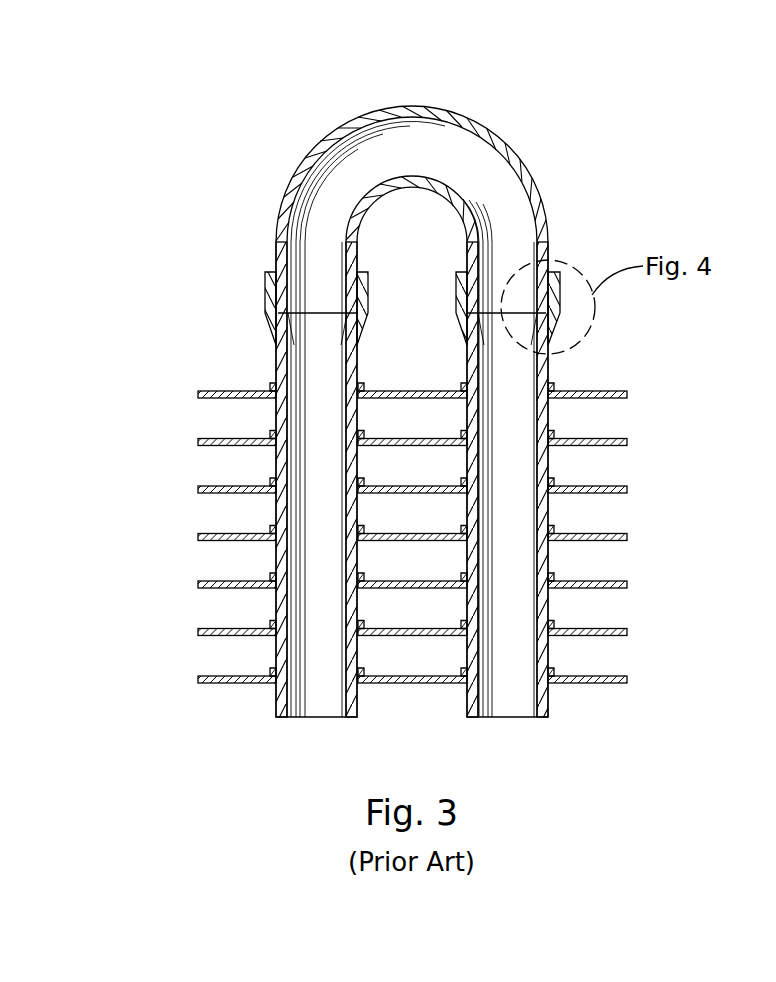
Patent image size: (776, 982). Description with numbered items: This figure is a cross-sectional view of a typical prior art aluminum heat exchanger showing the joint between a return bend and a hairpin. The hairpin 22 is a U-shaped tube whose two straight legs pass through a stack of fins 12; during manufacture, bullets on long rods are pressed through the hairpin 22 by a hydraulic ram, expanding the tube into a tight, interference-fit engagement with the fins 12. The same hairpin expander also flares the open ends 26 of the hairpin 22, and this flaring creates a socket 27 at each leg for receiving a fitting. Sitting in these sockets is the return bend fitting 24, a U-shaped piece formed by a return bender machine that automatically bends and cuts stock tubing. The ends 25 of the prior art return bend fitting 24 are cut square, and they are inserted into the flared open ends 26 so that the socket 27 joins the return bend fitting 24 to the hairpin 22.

The return bend fitting 24 is at (513, 150).
The hairpin 22 is at (550, 693).
The fin 12 is at (593, 582).
The end of return bend fitting 25 is at (272, 327).
The open end of hairpin 26 is at (550, 362).
The socket 27 is at (343, 321).